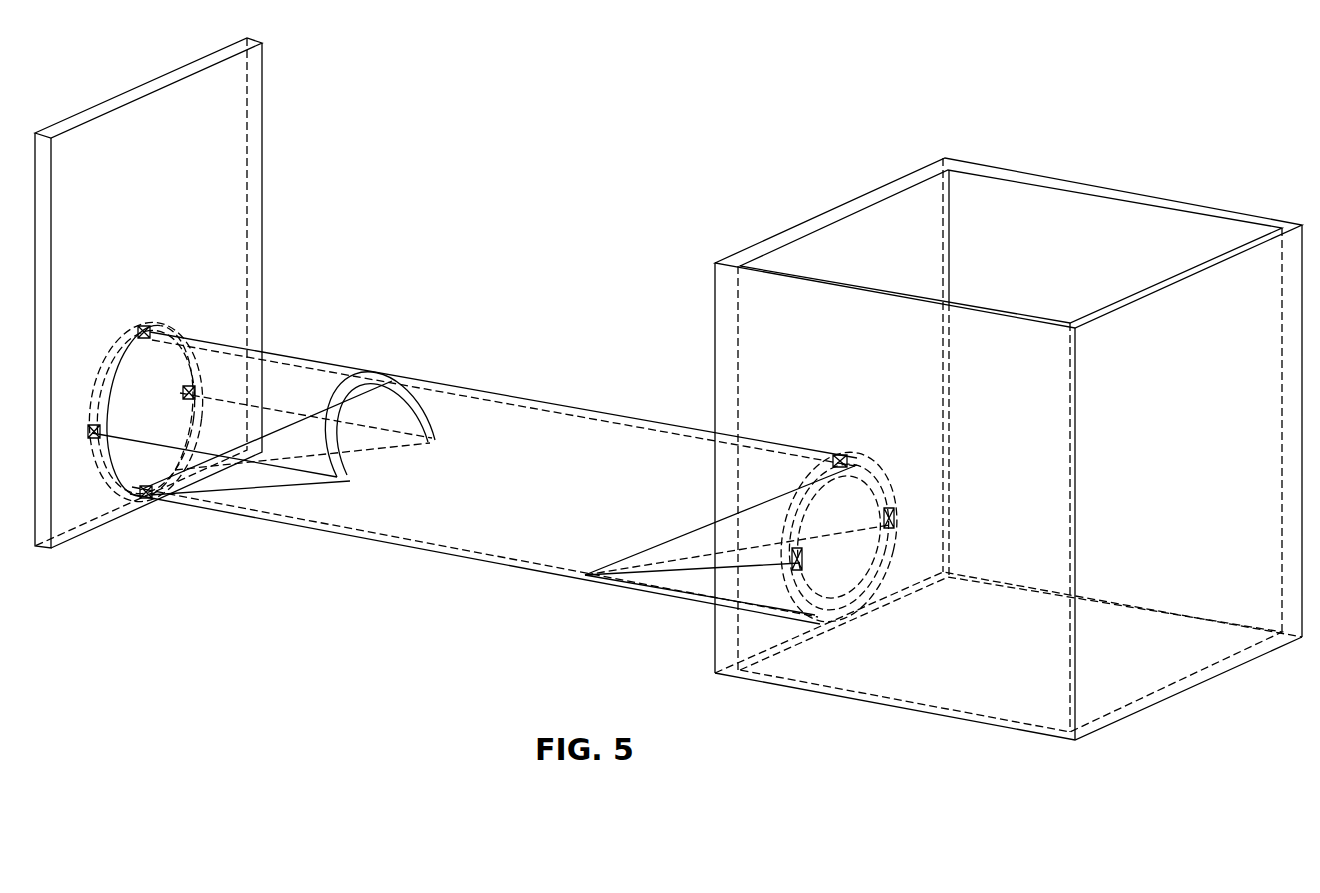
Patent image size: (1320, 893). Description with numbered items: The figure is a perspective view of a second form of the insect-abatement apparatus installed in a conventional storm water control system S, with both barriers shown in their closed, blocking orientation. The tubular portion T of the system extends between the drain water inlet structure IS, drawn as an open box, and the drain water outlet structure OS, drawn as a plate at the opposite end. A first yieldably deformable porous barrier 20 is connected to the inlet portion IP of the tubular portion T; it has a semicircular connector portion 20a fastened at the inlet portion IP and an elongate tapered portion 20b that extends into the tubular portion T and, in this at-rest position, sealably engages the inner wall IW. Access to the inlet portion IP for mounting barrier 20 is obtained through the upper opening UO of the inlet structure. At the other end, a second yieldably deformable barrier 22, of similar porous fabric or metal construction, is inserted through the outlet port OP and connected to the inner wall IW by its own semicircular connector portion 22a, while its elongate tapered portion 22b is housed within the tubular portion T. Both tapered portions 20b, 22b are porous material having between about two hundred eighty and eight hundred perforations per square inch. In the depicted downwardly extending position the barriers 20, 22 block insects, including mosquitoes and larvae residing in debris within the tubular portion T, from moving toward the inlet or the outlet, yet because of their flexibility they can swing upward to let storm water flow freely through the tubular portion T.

The drain water outlet structure OS is at (262, 98).
The storm water control system S is at (630, 177).
The upper opening UO is at (1025, 228).
The drain water inlet structure IS is at (1173, 197).
The outlet port OP is at (102, 383).
The inlet portion IP is at (860, 600).
The tubular portion T is at (463, 385).
The inner wall IW is at (540, 407).
The first yieldably deformable porous barrier 20 is at (710, 540).
The semicircular connector portion 20a is at (857, 450).
The elongate tapered portion 20b is at (665, 578).
The second yieldably deformable barrier 22 is at (270, 473).
The semicircular connector portion 22a is at (377, 382).
The elongate tapered portion 22b is at (193, 493).